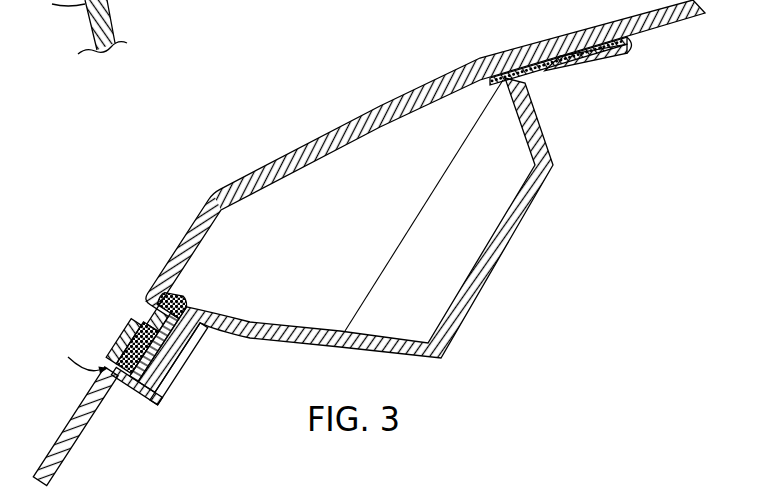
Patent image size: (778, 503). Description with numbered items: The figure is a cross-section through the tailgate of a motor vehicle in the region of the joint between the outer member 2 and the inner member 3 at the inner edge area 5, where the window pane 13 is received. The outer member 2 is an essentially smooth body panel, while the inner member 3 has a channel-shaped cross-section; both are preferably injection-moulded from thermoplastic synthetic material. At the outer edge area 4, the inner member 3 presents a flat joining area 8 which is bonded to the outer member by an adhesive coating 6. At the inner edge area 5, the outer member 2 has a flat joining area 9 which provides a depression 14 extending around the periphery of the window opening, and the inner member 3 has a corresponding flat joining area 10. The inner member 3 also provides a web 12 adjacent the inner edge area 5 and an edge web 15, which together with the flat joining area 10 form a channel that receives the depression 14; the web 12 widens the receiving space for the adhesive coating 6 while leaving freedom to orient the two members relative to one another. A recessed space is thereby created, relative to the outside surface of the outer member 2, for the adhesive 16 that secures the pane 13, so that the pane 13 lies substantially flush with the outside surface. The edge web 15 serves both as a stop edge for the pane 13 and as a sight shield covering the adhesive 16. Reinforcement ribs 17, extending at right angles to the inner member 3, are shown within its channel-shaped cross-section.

The outer member 2 is at (401, 96).
The inner member 3 is at (473, 283).
The outer edge area 4 is at (641, 35).
The inner edge area 5 is at (72, 186).
The adhesive coating 6 is at (570, 64).
The flat joining area 8 is at (597, 56).
The flat joining area 9 is at (158, 372).
The flat joining area 10 is at (187, 341).
The web 12 is at (184, 307).
The window pane 13 is at (75, 412).
The depression 14 is at (155, 322).
The edge web 15 is at (133, 392).
The adhesive 16 is at (123, 340).
The reinforcement ribs 17 is at (484, 220).